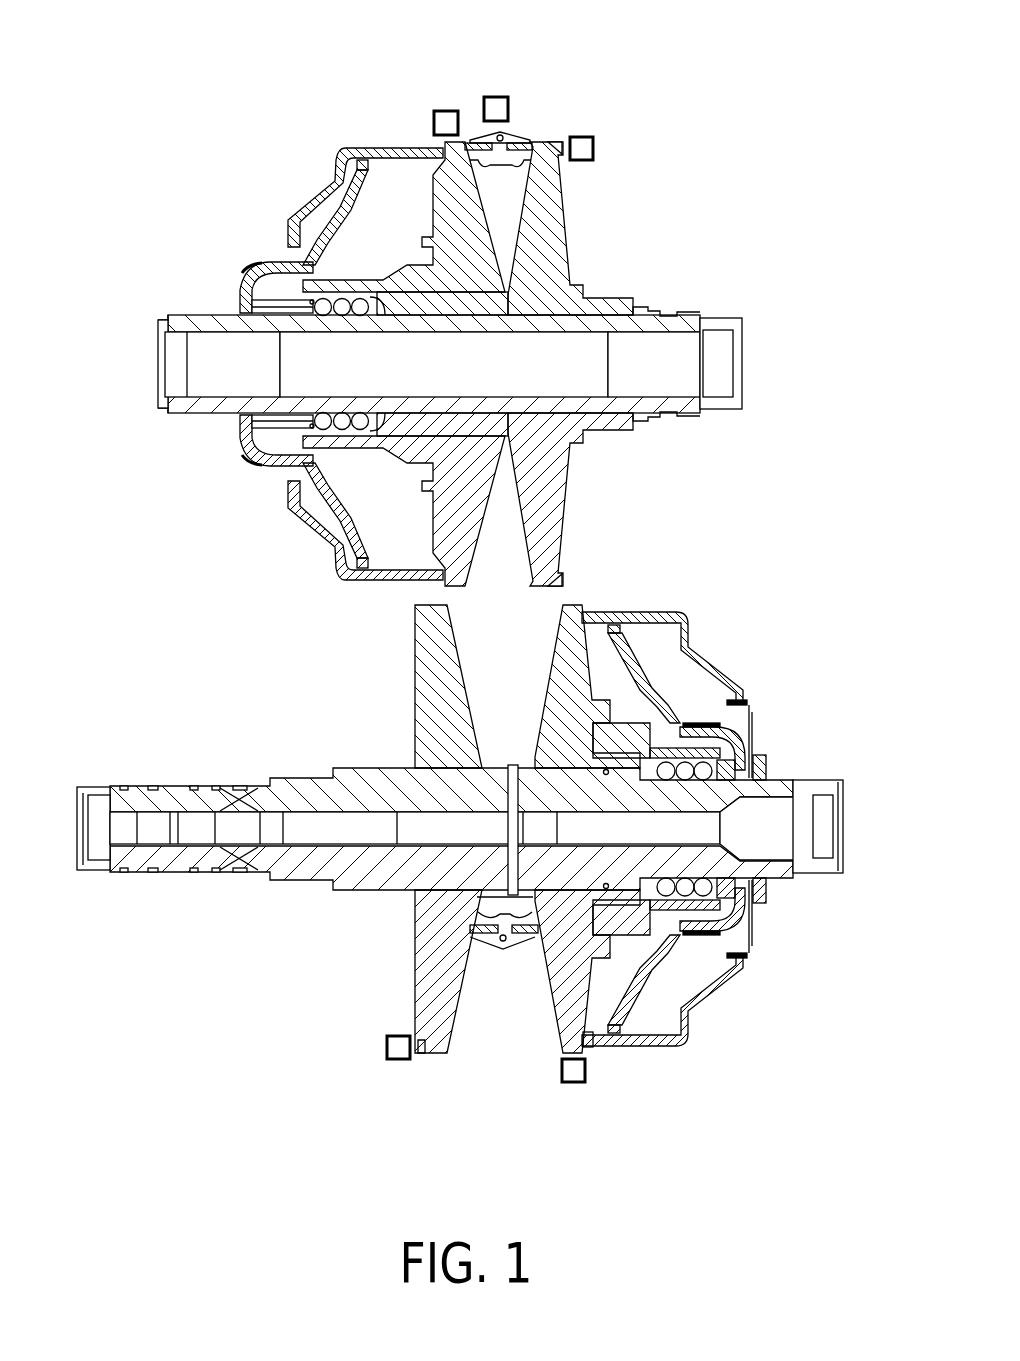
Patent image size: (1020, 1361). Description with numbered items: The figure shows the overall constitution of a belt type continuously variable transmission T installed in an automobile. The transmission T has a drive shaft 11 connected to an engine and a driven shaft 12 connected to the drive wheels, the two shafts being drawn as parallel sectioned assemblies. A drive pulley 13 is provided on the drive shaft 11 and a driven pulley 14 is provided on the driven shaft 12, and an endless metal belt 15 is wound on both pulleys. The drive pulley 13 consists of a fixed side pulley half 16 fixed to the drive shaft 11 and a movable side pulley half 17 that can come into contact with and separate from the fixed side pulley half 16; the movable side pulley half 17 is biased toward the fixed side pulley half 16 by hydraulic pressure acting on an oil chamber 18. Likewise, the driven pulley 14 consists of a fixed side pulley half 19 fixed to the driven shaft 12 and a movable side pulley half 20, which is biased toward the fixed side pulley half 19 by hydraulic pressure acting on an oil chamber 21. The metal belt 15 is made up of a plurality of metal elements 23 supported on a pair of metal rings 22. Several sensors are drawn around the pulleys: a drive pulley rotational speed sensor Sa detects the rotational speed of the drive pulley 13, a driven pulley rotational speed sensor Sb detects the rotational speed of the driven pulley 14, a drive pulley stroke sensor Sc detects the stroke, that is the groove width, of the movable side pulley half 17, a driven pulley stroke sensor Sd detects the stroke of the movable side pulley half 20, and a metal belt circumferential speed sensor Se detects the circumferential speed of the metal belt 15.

The belt type continuously variable transmission T is at (460, 571).
The drive shaft 11 is at (647, 306).
The driven shaft 12 is at (373, 777).
The drive pulley 13 is at (503, 364).
The driven pulley 14 is at (527, 814).
The endless metal belt 15 is at (521, 125).
The fixed side pulley half 16 is at (558, 262).
The movable side pulley half 17 is at (467, 203).
The oil chamber 18 is at (396, 243).
The fixed side pulley half 19 is at (447, 680).
The movable side pulley half 20 is at (578, 829).
The oil chamber 21 is at (640, 727).
The metal ring 22 is at (529, 938).
The metal element 23 is at (484, 137).
The drive pulley rotational speed sensor Sa is at (588, 137).
The driven pulley rotational speed sensor Sb is at (386, 1047).
The drive pulley stroke sensor Sc is at (443, 111).
The driven pulley stroke sensor Sd is at (583, 1082).
The metal belt circumferential speed sensor Se is at (495, 97).